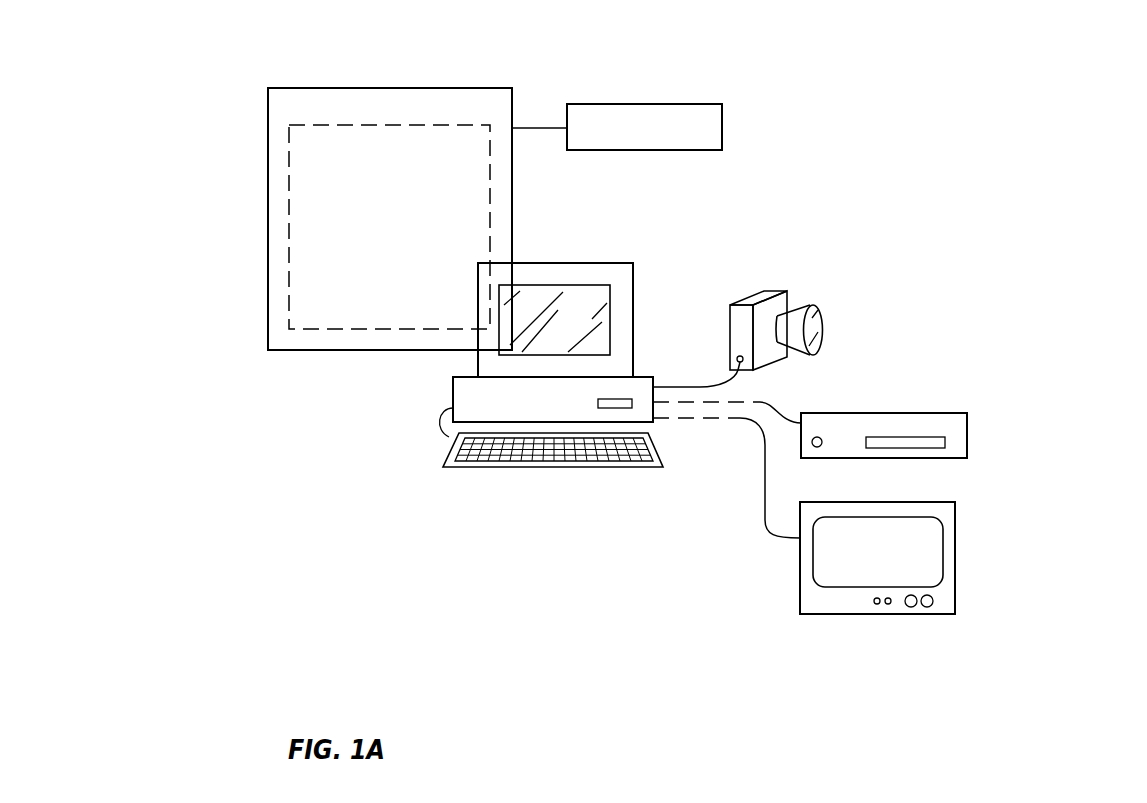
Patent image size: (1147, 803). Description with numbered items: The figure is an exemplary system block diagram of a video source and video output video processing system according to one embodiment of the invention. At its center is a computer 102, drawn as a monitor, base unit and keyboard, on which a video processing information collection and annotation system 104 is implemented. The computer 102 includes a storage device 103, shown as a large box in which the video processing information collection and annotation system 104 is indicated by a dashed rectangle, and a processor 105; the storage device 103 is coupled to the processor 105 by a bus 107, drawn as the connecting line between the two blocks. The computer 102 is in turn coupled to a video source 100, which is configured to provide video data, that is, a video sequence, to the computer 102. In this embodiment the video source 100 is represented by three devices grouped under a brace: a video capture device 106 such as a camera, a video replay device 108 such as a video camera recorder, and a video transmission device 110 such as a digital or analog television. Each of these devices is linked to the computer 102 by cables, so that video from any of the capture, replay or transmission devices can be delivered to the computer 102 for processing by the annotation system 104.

The video source 100 is at (916, 479).
The computer 102 is at (582, 263).
The storage device 103 is at (326, 88).
The video processing information collection and annotation system 104 is at (289, 152).
The processor 105 is at (707, 104).
The video capture device 106 is at (766, 291).
The bus 107 is at (545, 128).
The video replay device 108 is at (952, 413).
The video transmission device 110 is at (950, 502).